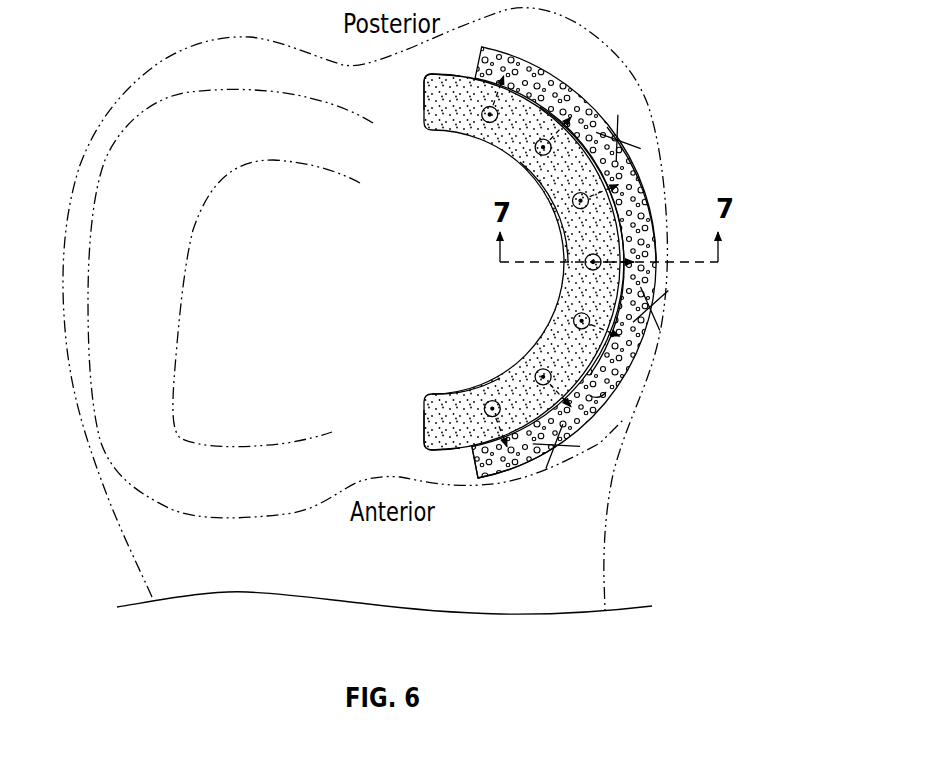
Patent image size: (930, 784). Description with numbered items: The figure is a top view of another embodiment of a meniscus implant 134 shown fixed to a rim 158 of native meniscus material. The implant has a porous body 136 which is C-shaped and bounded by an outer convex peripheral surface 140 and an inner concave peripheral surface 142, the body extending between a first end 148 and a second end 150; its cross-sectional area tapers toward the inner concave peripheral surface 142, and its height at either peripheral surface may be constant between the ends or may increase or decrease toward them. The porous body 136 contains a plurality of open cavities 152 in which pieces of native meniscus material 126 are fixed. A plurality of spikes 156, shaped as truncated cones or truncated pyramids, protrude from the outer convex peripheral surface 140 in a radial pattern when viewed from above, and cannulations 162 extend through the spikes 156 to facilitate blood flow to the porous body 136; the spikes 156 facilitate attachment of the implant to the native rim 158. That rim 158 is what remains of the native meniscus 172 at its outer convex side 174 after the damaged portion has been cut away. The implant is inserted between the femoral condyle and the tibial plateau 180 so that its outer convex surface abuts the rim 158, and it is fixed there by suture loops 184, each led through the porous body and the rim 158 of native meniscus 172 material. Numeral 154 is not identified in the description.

The pieces of native meniscus material 126 is at (624, 181).
The meniscus implant 134 is at (638, 43).
The porous body 136 is at (437, 137).
The outer convex peripheral surface 140 is at (563, 116).
The inner concave peripheral surface 142 is at (545, 333).
The first end 148 is at (421, 98).
The second end 150 is at (418, 433).
The open cavities 152 is at (488, 124).
The back surface 154 is at (453, 397).
The spikes 156 is at (601, 122).
The rim of native meniscus material 158 is at (654, 203).
The cannulations 162 is at (566, 450).
The native meniscus 172 is at (618, 360).
The outer convex side of the native meniscus 174 is at (497, 482).
The tibial plateau 180 is at (342, 277).
The suture loops 184 is at (655, 306).